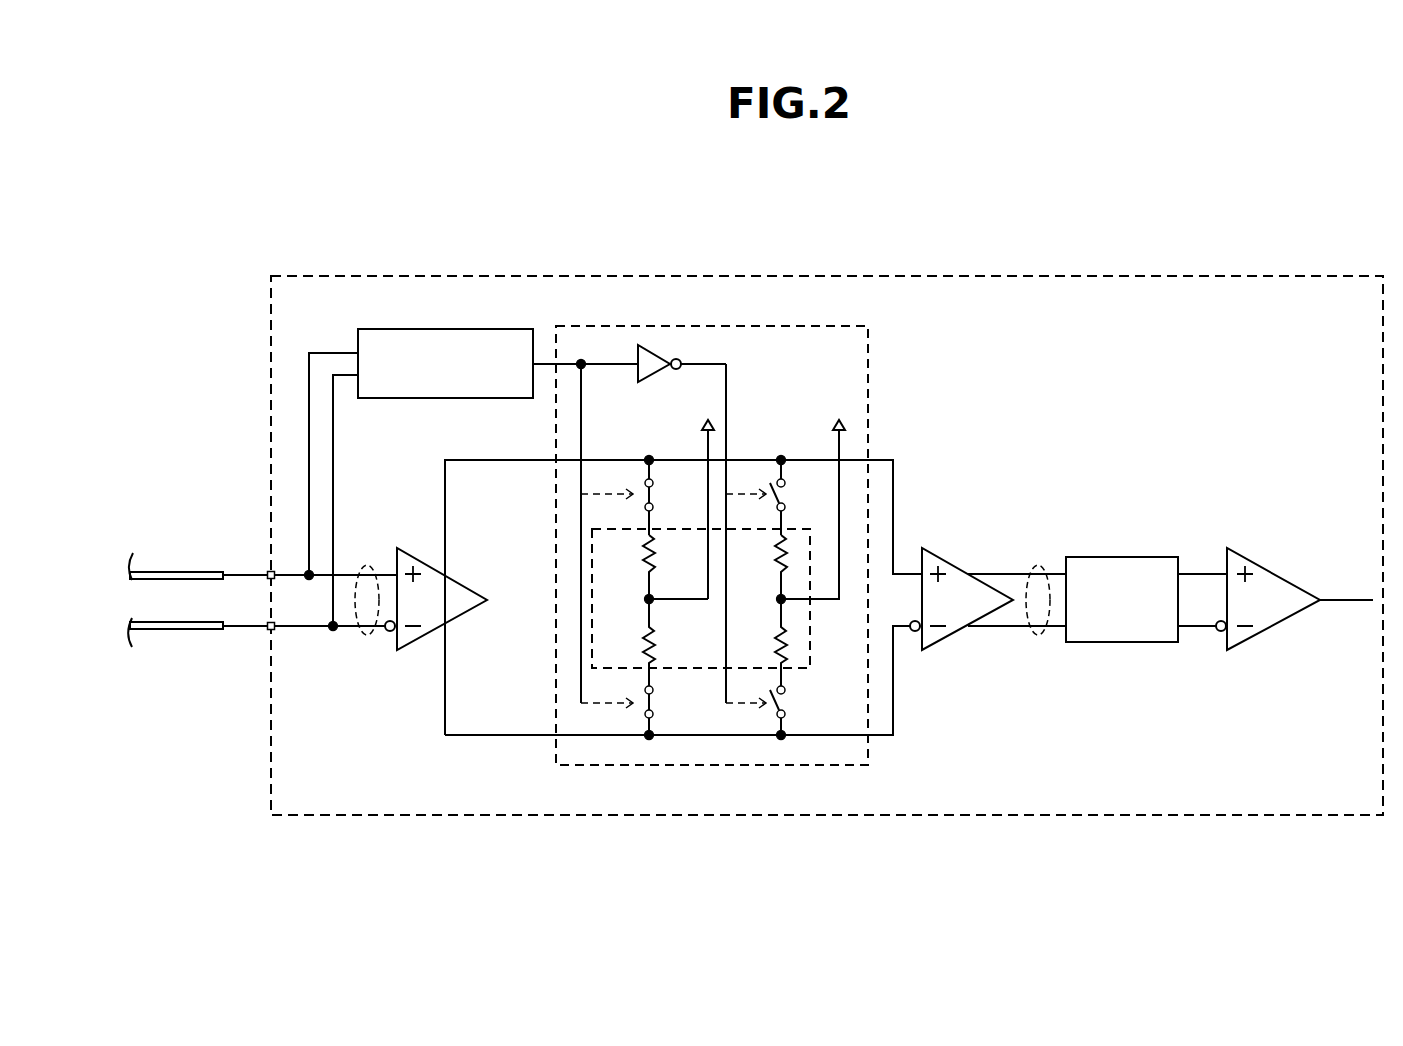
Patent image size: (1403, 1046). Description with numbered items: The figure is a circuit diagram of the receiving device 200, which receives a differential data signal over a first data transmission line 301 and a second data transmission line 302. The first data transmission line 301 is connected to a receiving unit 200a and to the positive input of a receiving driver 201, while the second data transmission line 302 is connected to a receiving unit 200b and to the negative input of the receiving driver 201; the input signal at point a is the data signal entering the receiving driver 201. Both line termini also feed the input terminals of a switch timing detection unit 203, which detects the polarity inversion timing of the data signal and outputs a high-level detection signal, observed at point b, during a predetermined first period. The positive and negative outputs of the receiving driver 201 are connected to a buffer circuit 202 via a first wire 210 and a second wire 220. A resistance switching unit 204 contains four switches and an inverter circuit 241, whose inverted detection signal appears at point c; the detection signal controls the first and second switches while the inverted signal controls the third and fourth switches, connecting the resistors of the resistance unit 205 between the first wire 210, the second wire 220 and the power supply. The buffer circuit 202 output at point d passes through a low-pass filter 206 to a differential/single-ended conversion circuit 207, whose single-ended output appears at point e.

The receiving device 200 is at (843, 275).
The receiving unit 200a is at (268, 571).
The receiving unit 200b is at (268, 630).
The receiving driver 201 is at (413, 647).
The buffer circuit 202 is at (950, 640).
The switch timing detection unit 203 is at (475, 329).
The resistance switching unit 204 is at (765, 327).
The resistance unit 205 is at (592, 553).
The low-pass filter 206 is at (1115, 557).
The differential/single-ended conversion circuit 207 is at (1257, 642).
The first wire 210 is at (497, 460).
The second wire 220 is at (497, 736).
The inverter circuit 241 is at (645, 382).
The first data transmission line 301 is at (175, 568).
The second data transmission line 302 is at (177, 633).
The point a is at (366, 565).
The point b is at (616, 361).
The point c is at (706, 361).
The point d is at (1040, 565).
The point e is at (1341, 598).